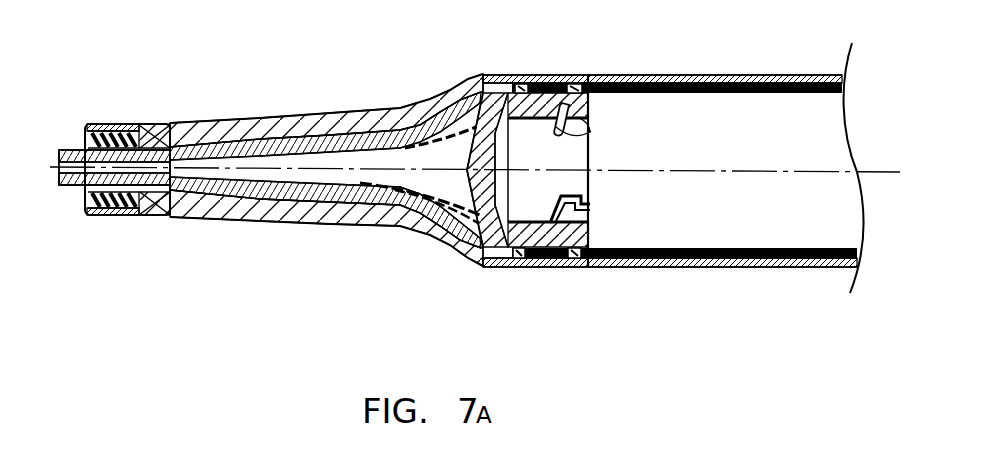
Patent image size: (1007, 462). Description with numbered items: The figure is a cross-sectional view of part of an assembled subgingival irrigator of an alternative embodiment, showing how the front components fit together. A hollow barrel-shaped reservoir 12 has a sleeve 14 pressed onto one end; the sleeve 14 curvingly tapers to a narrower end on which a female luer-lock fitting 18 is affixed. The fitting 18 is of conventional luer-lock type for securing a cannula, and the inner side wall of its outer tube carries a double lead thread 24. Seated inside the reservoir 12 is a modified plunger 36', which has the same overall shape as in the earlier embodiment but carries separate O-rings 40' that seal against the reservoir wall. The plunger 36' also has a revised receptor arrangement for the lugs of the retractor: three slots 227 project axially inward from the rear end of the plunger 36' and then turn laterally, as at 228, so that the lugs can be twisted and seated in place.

The reservoir 12 is at (727, 74).
The sleeve 14 is at (303, 122).
The female luer-lock fitting 18 is at (122, 208).
The double lead thread 24 is at (134, 126).
The O-rings 40' is at (527, 62).
The modified plunger 36' is at (540, 278).
The slots 227 is at (591, 101).
The lateral turn of slots 228 is at (591, 131).